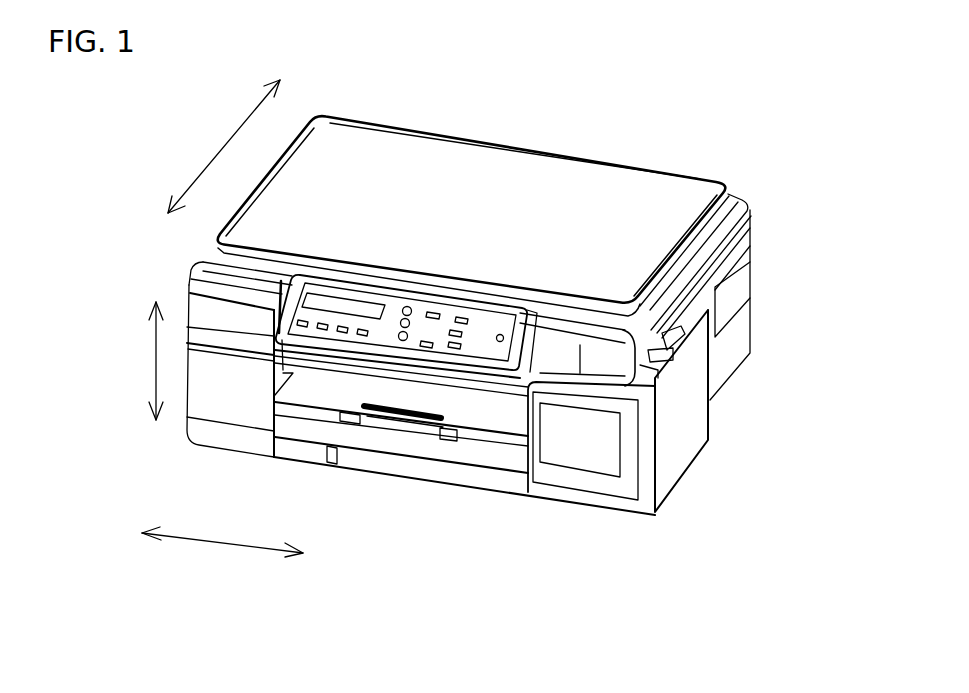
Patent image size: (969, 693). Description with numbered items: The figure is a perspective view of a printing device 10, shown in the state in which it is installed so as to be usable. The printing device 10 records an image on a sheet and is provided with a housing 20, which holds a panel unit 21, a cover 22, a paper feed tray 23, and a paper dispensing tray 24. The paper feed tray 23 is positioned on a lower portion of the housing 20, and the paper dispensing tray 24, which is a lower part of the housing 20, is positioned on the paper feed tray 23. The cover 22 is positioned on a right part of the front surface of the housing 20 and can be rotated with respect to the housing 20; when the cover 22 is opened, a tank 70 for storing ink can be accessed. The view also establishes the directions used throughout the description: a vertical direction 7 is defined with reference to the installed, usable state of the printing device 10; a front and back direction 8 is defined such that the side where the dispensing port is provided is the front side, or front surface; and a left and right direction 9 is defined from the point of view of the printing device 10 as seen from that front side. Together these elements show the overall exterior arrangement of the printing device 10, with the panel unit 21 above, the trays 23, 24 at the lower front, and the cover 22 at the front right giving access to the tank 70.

The printing device 10 is at (643, 152).
The housing 20 is at (766, 247).
The panel unit 21 is at (294, 274).
The cover 22 is at (627, 480).
The tank 70 is at (597, 450).
The paper feed tray 23 is at (400, 462).
The paper dispensing tray 24 is at (323, 413).
The vertical direction 7 is at (142, 364).
The front and back direction 8 is at (215, 137).
The left and right direction 9 is at (228, 556).